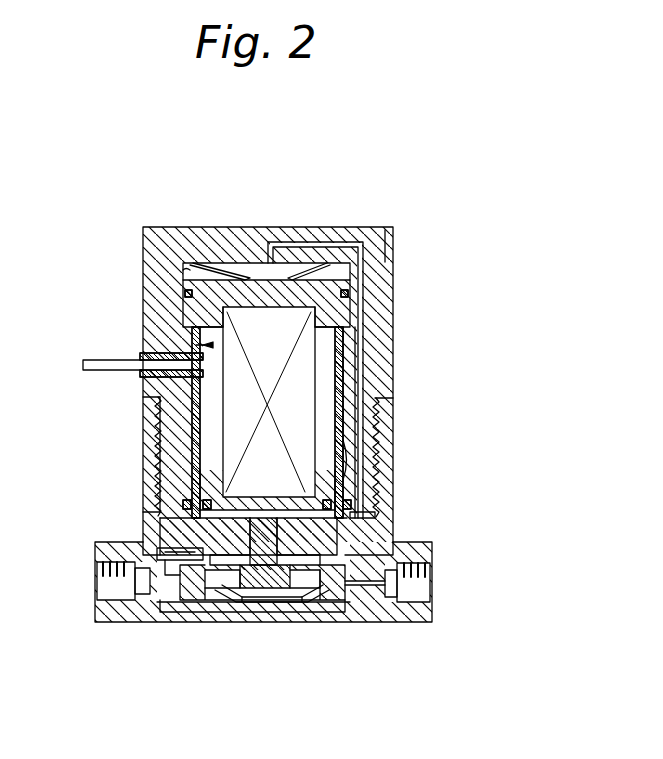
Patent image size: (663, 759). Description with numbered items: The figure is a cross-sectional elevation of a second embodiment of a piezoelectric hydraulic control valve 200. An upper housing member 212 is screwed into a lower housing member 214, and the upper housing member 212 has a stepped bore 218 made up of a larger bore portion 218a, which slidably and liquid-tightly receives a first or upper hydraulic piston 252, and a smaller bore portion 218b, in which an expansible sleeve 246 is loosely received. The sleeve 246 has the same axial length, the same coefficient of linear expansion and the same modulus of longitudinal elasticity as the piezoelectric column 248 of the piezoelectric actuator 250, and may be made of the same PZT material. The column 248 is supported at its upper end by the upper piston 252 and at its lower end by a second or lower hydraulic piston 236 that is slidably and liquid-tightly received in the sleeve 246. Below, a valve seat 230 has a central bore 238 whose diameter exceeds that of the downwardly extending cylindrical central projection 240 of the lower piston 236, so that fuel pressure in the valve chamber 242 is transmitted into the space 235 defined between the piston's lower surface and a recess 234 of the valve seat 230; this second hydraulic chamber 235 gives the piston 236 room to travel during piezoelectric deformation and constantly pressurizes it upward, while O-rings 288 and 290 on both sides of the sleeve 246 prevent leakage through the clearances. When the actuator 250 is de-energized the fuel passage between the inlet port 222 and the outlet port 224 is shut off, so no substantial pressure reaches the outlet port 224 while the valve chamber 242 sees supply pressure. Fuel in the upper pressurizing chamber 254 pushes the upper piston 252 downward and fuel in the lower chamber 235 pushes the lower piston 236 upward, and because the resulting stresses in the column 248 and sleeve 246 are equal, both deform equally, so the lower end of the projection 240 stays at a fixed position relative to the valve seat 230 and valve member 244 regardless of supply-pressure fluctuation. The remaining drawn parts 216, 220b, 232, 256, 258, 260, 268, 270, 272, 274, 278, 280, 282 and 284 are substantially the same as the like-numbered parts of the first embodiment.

The piezoelectric hydraulic control valve 200 is at (492, 212).
The upper housing member 212 is at (385, 235).
The lower housing member 214 is at (408, 625).
The lower housing 216 is at (142, 428).
The stepped bore 218 is at (183, 270).
The larger bore portion 218a is at (362, 345).
The smaller bore portion 218b is at (350, 382).
The outlet passage 220b is at (160, 612).
The inlet port 222 is at (433, 585).
The outlet port 224 is at (100, 596).
The valve seat 230 is at (432, 548).
The bottom plate 232 is at (160, 533).
The recess 234 is at (365, 515).
The second hydraulic chamber 235 is at (160, 516).
The second or lower hydraulic piston 236 is at (345, 460).
The central bore 238 is at (290, 600).
The cylindrical central projection 240 is at (262, 600).
The valve chamber 242 is at (250, 612).
The valve member 244 is at (355, 605).
The expansible sleeve 246 is at (192, 440).
The piezoelectric column 248 is at (393, 398).
The piezoelectric actuator 250 is at (145, 340).
The first or upper hydraulic piston 252 is at (340, 313).
The first pressurizing chamber 254 is at (253, 268).
The piston 256 is at (350, 296).
The o-ring 258 is at (350, 272).
The inlet pipe 260 is at (90, 358).
The tapered seat 268 is at (283, 630).
The valve body 270 is at (190, 612).
The seat lip 272 is at (310, 615).
The plate 274 is at (235, 600).
The retainer 278 is at (157, 552).
The channel 280 is at (160, 562).
The stem 282 is at (355, 545).
The pressure channel 284 is at (377, 252).
The O-ring 288 is at (183, 503).
The O-ring 290 is at (330, 500).